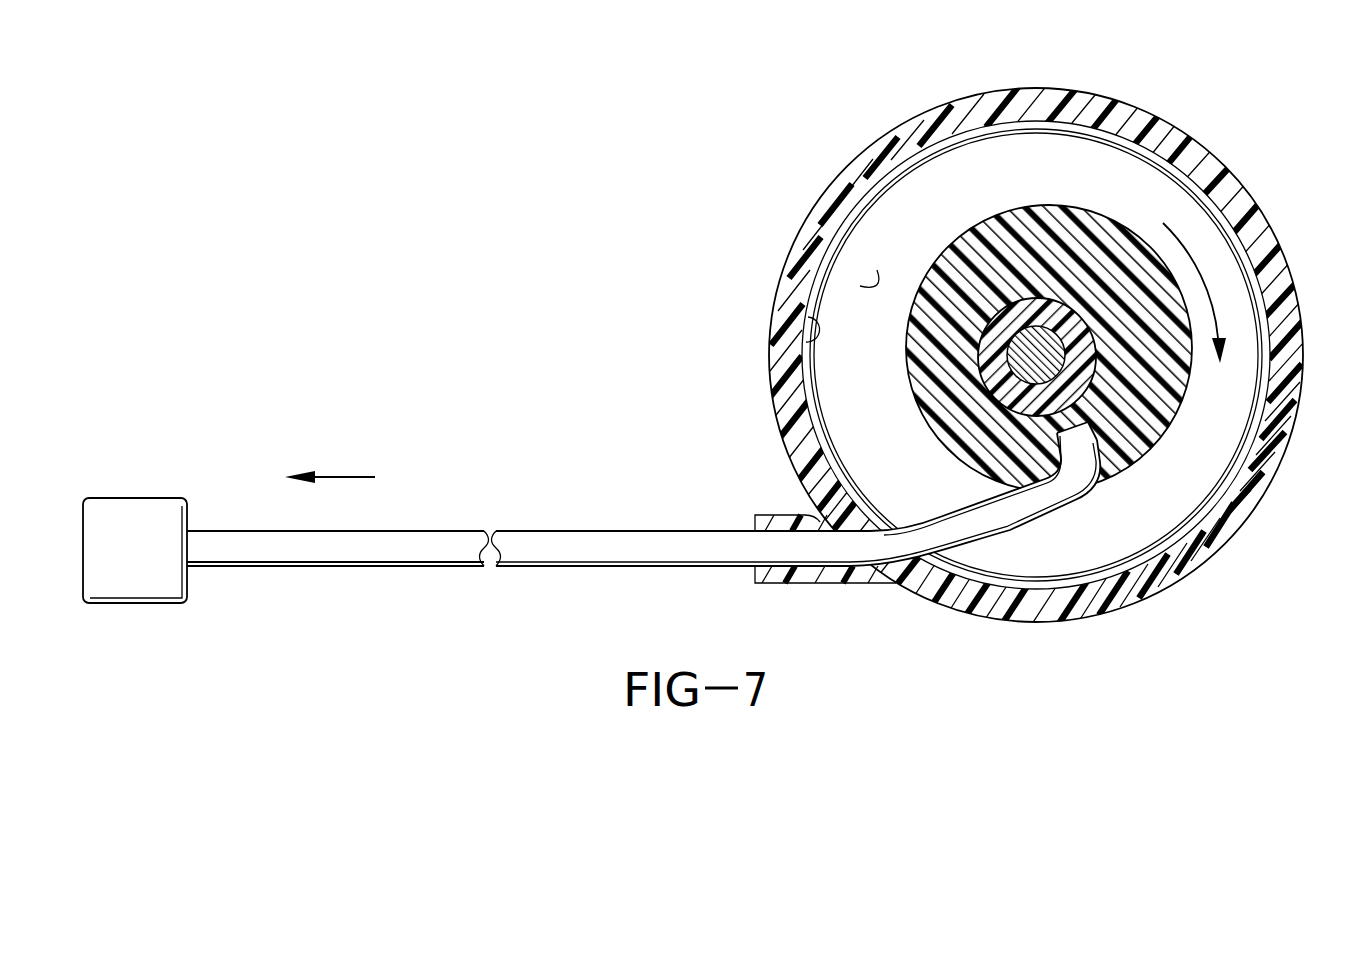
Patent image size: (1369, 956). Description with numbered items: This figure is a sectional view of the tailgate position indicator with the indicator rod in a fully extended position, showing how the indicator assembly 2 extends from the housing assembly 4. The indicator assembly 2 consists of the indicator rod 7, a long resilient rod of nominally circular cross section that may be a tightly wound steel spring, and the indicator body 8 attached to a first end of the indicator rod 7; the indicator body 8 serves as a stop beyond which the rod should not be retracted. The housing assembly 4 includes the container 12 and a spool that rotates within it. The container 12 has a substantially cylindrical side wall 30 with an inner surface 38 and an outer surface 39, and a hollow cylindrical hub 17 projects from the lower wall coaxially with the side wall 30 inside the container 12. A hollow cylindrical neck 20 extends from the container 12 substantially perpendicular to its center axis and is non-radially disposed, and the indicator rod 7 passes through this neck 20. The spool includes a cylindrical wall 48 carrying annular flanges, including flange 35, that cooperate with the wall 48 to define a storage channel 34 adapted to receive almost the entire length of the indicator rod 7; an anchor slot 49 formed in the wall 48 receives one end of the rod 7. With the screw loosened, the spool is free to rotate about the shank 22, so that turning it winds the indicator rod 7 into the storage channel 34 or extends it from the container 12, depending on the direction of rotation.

The indicator assembly 2 is at (400, 578).
The housing assembly 4 is at (1205, 125).
The indicator rod 7 is at (305, 558).
The indicator body 8 is at (133, 508).
The container 12 is at (1253, 186).
The hub 17 is at (1017, 313).
The neck 20 is at (822, 584).
The shank 22 is at (1050, 342).
The side wall 30 is at (880, 162).
The storage channel 34 is at (877, 270).
The annular flange 35 is at (892, 213).
The inner surface 38 is at (817, 328).
The outer surface 39 is at (812, 205).
The cylindrical wall 48 is at (1107, 277).
The anchor slot 49 is at (1092, 428).